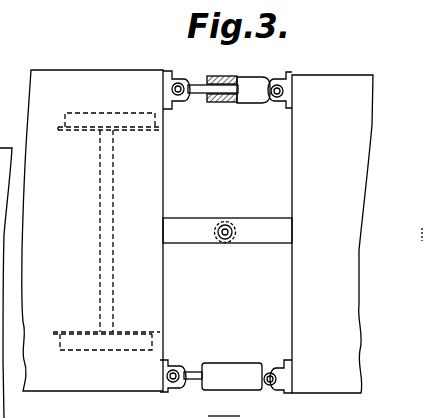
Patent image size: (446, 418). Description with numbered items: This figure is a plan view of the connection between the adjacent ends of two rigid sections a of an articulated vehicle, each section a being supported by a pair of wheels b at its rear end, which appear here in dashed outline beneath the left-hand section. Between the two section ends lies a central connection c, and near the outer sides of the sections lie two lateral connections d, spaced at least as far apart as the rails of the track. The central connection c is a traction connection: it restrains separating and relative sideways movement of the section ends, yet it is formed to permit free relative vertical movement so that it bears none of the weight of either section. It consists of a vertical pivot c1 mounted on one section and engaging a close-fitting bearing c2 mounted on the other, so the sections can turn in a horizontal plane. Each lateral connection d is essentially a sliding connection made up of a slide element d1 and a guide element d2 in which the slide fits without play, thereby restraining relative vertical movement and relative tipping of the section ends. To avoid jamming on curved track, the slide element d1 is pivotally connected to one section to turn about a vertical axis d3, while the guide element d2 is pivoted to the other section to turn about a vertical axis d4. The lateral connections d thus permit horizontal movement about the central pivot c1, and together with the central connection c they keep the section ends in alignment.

The rigid section a is at (197, 231).
The wheels b is at (98, 133).
The central connection c is at (214, 255).
The vertical pivot c1 is at (229, 226).
The bearing c2 is at (233, 232).
The lateral connection d is at (240, 69).
The slide element d1 is at (170, 400).
The guide element d2 is at (248, 368).
The vertical axis d3 is at (176, 370).
The vertical axis d4 is at (304, 383).